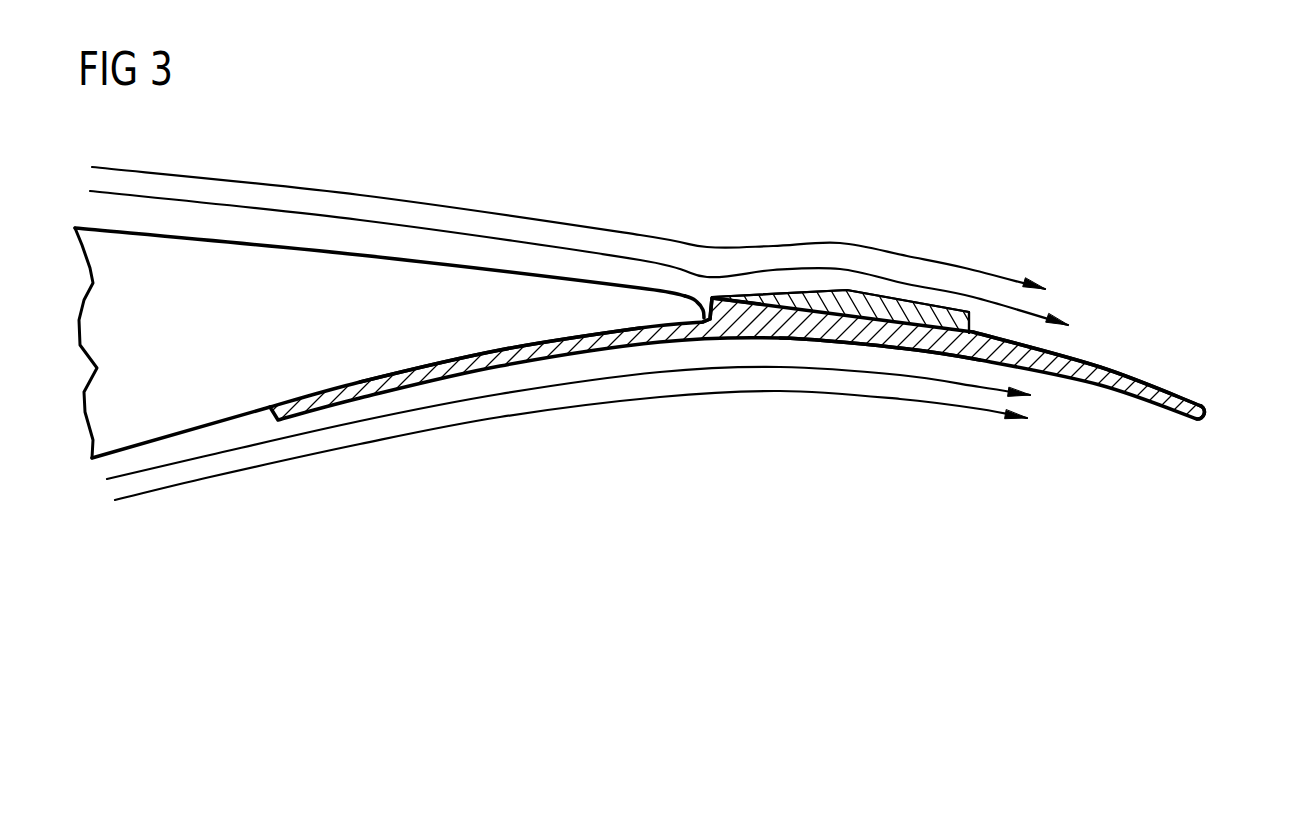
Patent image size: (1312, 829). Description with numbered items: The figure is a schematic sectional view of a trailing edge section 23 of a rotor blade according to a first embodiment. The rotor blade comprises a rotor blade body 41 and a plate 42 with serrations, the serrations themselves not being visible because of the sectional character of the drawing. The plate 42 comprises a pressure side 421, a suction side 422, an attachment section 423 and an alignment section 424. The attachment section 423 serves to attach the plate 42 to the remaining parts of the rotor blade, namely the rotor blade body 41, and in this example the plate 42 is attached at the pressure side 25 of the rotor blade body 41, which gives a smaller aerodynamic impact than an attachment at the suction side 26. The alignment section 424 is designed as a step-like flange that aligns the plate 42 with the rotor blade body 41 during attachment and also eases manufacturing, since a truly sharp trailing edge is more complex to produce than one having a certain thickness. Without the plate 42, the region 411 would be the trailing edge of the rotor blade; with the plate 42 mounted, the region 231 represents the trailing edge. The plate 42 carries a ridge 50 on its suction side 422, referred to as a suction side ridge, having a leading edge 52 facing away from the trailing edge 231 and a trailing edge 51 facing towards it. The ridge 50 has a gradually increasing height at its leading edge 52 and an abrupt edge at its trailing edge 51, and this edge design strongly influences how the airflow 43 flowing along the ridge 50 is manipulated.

The trailing edge section 23 is at (616, 164).
The trailing edge 231 is at (1218, 413).
The pressure side 25 is at (233, 415).
The suction side 26 is at (380, 255).
The rotor blade body 41 is at (395, 325).
The region 411 is at (692, 292).
The plate 42 is at (778, 325).
The pressure side 421 is at (910, 353).
The suction side 422 is at (1097, 366).
The attachment section 423 is at (525, 355).
The alignment section 424 is at (727, 323).
The airflow 43 is at (505, 238).
The ridge 50 is at (883, 302).
The trailing edge 51 is at (975, 325).
The leading edge 52 is at (787, 293).